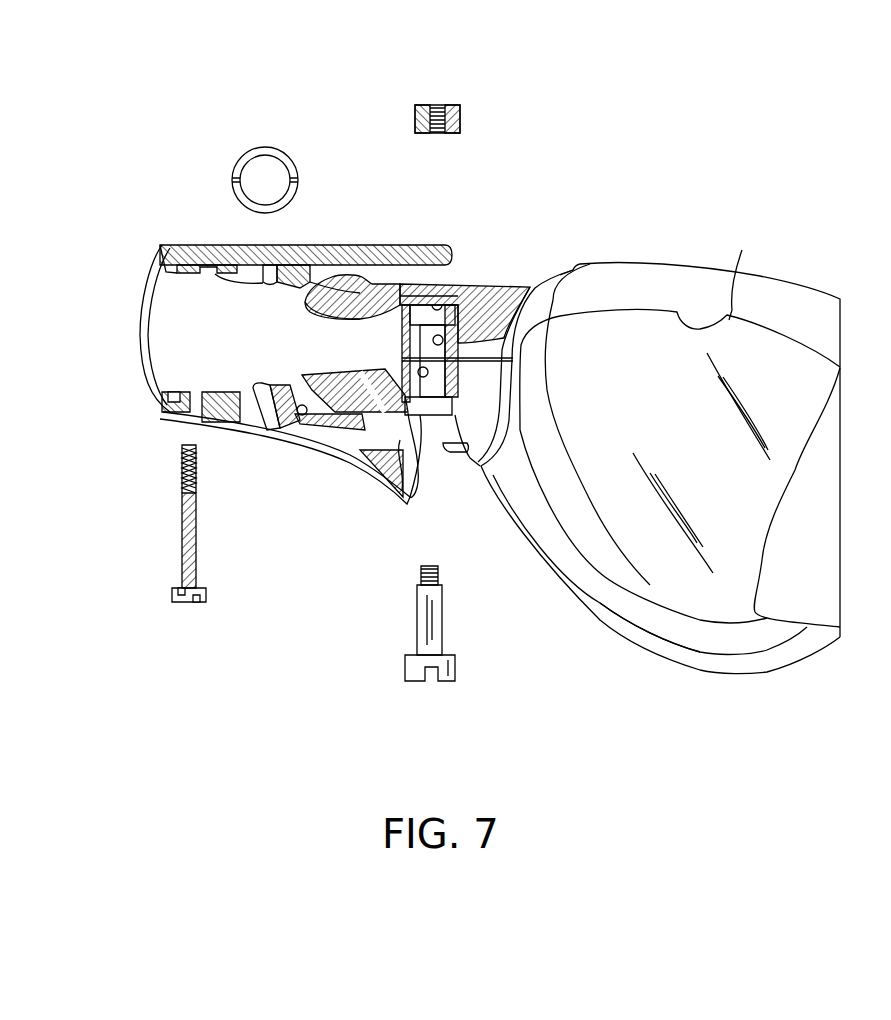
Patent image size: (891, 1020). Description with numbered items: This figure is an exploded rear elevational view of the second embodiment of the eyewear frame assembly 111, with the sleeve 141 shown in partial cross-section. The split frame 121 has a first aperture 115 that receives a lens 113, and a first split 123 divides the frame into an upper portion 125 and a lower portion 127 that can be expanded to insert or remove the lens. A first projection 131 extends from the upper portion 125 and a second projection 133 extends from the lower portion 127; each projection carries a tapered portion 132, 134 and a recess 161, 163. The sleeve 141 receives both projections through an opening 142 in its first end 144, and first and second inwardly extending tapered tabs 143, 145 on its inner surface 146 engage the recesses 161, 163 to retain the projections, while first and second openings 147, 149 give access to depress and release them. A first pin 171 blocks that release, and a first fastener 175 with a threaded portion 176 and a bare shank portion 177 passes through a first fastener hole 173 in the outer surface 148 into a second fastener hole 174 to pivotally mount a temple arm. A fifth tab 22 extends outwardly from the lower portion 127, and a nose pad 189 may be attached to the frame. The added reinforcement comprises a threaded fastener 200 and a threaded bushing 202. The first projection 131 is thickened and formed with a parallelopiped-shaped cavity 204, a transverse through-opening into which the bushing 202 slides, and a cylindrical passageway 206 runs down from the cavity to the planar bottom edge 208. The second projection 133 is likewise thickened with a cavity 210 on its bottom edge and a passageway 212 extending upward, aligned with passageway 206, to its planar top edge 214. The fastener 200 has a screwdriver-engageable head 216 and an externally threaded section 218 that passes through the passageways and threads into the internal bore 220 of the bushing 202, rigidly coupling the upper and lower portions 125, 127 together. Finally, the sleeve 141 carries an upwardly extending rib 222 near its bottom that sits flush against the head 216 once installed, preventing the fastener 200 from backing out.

The fifth tab 22 is at (465, 458).
The eyewear frame assembly 111 is at (641, 221).
The lens 113 is at (627, 567).
The first aperture 115 is at (740, 268).
The split frame 121 is at (555, 602).
The first split 123 is at (517, 363).
The upper portion 125 is at (535, 334).
The lower portion 127 is at (522, 431).
The first projection 131 is at (494, 269).
The first tapered portion 132 is at (308, 295).
The second projection 133 is at (440, 421).
The second tapered portion 134 is at (302, 377).
The sleeve 141 is at (153, 221).
The opening 142 is at (412, 497).
The first inwardly extending tapered tab 143 is at (263, 285).
The first end 144 is at (451, 247).
The second inwardly extending tapered tab 145 is at (253, 388).
The inner surface 146 is at (374, 245).
The first opening 147 is at (298, 245).
The outer surface 148 is at (216, 244).
The second opening 149 is at (264, 432).
The first recess 161 is at (395, 246).
The second recess 163 is at (352, 479).
The first pin 171 is at (290, 158).
The first fastener hole 173 is at (185, 414).
The second fastener hole 174 is at (200, 273).
The first fastener 175 is at (186, 579).
The threaded portion 176 is at (183, 463).
The shank portion 177 is at (196, 531).
The nose pad 189 is at (762, 500).
The threaded fastener 200 is at (388, 661).
The threaded bushing 202 is at (481, 110).
The cavity 204 is at (442, 284).
The passageway 206 is at (532, 288).
The bottom edge 208 is at (460, 381).
The cavity 210 is at (472, 406).
The passageway 212 is at (402, 359).
The top edge 214 is at (402, 337).
The head 216 is at (438, 683).
The externally threaded section 218 is at (440, 576).
The internal bore 220 is at (438, 105).
The rib 222 is at (301, 418).